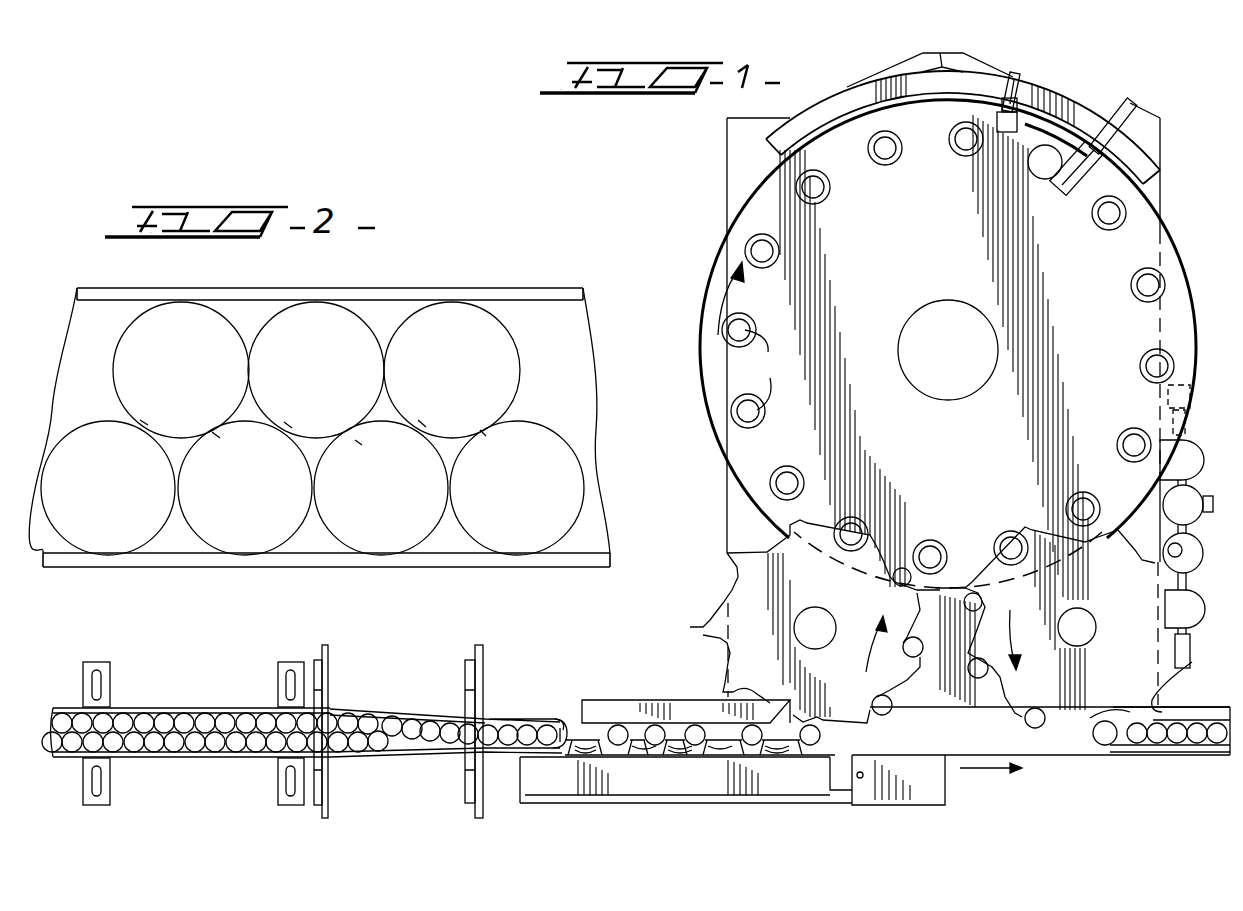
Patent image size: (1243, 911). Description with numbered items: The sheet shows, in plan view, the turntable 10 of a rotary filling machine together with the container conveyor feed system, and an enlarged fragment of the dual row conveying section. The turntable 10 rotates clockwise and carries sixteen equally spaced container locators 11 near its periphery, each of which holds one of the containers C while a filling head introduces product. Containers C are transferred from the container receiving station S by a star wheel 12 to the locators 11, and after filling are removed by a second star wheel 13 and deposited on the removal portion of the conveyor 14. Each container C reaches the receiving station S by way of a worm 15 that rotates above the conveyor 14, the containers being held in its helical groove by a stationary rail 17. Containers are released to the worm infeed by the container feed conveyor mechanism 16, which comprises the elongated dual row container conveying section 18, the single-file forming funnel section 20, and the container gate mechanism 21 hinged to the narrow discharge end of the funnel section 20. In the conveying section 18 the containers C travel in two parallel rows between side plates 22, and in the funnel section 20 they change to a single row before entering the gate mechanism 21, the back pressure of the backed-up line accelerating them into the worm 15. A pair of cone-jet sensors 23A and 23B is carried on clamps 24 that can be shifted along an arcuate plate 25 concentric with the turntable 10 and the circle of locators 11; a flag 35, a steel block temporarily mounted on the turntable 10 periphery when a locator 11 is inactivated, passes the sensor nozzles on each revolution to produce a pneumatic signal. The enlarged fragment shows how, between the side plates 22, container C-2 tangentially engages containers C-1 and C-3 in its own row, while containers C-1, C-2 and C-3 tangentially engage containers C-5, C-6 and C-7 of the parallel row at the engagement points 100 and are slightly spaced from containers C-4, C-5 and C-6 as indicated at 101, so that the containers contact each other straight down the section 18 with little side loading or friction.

In FIG. 1, the turntable 10 is at (932, 247).
In FIG. 1, the container locators 11 is at (762, 370).
In FIG. 1, the star wheel 12 is at (703, 630).
In FIG. 1, the second star wheel 13 is at (1120, 552).
In FIG. 1, the conveyor 14 is at (447, 705).
In FIG. 1, the worm 15 is at (678, 740).
In FIG. 1, the container feed conveyor mechanism 16 is at (360, 655).
In FIG. 1, the stationary rail 17 is at (610, 700).
In FIG. 1, the dual row container conveying section 18 is at (168, 700).
In FIG. 1, the funnel section 20 is at (406, 712).
In FIG. 1, the container gate mechanism 21 is at (512, 715).
In FIG. 1, the side plates 22 is at (230, 708).
In FIG. 2, the side plates 22 is at (418, 288).
In FIG. 1, the cone-jet sensor 23A is at (1090, 192).
In FIG. 1, the cone-jet sensor 23B is at (1005, 134).
In FIG. 1, the clamps 24 is at (1022, 100).
In FIG. 1, the arcuate plate 25 is at (1062, 128).
In FIG. 1, the flag 35 is at (1052, 136).
In FIG. 1, the containers C is at (817, 192).
In FIG. 1, the container receiving station S is at (828, 752).
In FIG. 2, the tangential engagement points 100 is at (212, 428).
In FIG. 2, the spacing 101 is at (137, 420).
In FIG. 2, the container C-1 is at (181, 370).
In FIG. 2, the container C-2 is at (316, 370).
In FIG. 2, the container C-3 is at (452, 370).
In FIG. 2, the container C-4 is at (108, 488).
In FIG. 2, the container C-5 is at (245, 488).
In FIG. 2, the container C-6 is at (381, 488).
In FIG. 2, the container C-7 is at (517, 488).